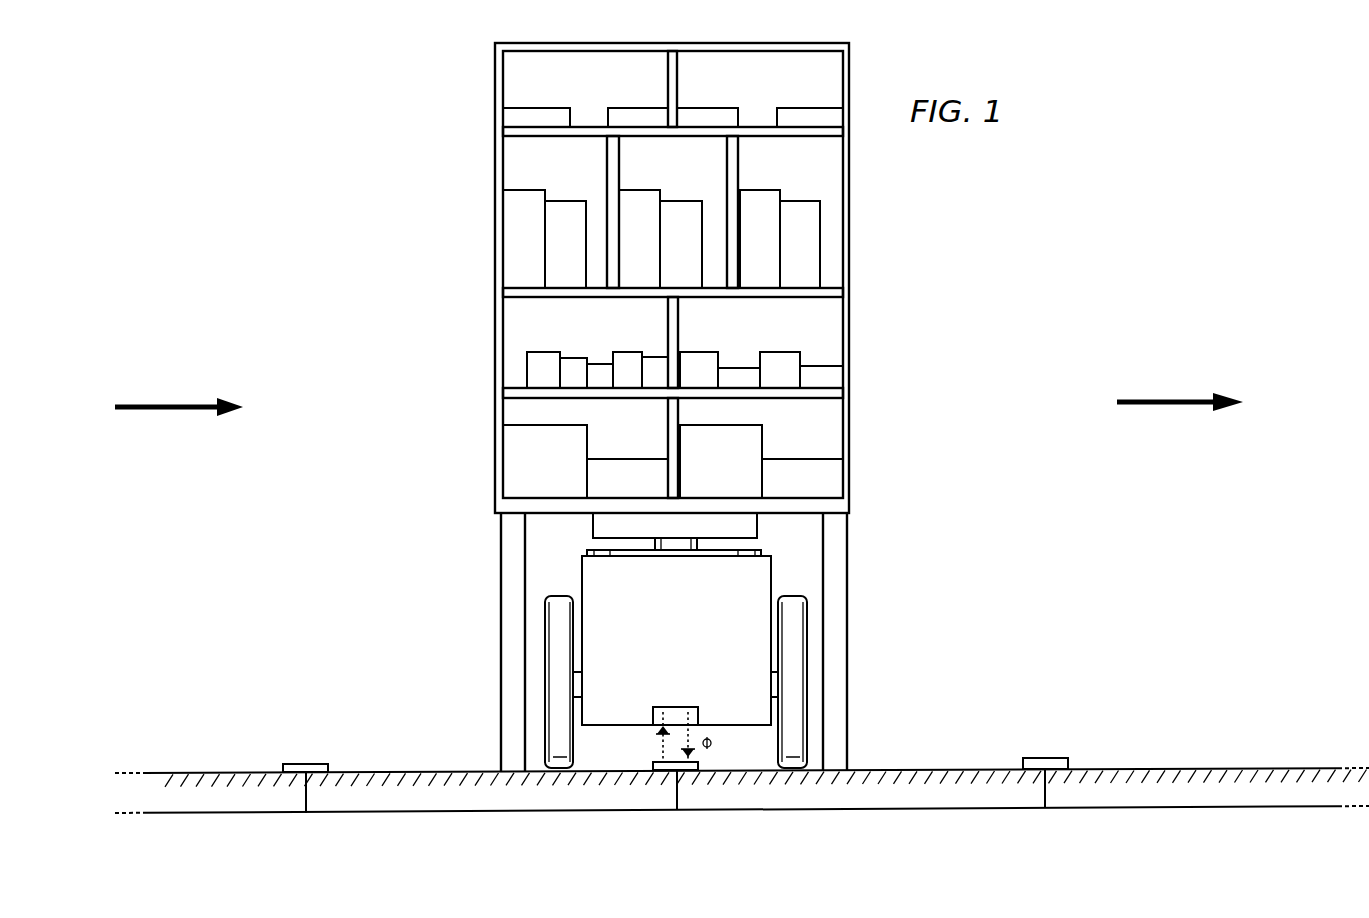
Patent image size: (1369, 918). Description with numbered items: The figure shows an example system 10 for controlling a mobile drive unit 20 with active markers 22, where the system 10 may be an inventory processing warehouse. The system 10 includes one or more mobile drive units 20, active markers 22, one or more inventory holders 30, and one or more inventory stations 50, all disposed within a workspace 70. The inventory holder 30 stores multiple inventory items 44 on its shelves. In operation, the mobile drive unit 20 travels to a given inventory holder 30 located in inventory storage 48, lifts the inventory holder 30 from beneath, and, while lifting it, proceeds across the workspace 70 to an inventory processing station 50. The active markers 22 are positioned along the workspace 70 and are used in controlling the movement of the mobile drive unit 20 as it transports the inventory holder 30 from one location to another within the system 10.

The system 10 is at (333, 141).
The mobile drive unit 20 is at (796, 570).
The active marker 22 is at (292, 763).
The inventory holder 30 is at (858, 200).
The inventory items 44 is at (643, 190).
The inventory storage 48 is at (179, 369).
The inventory processing station 50 is at (1169, 362).
The workspace 70 is at (1160, 767).